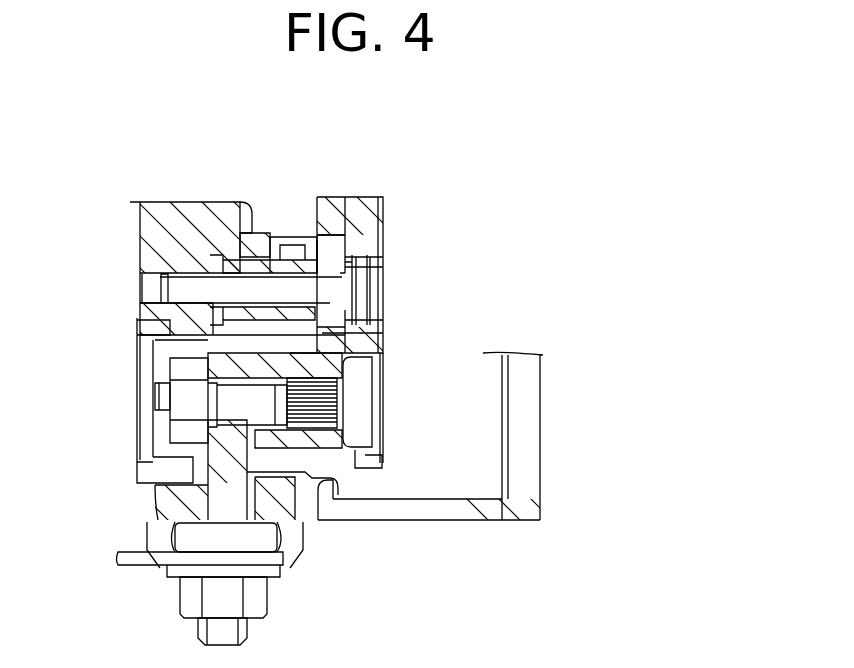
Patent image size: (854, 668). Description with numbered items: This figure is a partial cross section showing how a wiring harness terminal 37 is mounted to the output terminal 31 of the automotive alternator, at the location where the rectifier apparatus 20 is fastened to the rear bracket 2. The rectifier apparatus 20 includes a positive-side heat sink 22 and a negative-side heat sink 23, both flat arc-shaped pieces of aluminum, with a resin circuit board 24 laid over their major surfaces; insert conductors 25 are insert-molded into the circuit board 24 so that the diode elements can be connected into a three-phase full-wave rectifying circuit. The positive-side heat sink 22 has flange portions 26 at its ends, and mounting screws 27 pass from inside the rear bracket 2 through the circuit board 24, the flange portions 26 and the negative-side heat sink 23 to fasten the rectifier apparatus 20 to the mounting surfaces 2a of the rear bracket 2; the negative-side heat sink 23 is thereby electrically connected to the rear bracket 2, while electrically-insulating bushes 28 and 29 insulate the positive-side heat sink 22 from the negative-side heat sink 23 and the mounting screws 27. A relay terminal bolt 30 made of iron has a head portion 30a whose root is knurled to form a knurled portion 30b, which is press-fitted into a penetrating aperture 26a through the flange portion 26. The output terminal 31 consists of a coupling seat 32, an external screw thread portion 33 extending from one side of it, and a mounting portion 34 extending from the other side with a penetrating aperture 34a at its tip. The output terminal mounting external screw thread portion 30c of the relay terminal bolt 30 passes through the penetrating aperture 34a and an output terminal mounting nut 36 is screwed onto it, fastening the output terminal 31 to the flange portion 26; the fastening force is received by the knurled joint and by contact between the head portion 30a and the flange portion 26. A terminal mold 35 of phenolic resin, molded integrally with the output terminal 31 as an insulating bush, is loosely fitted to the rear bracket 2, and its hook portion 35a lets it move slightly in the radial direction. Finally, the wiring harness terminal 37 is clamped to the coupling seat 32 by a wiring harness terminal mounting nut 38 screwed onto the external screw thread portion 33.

The rear bracket 2 is at (129, 221).
The mounting surfaces 2a is at (251, 210).
The rectifier apparatus 20 is at (510, 194).
The positive-side heat sink 22 is at (299, 235).
The negative-side heat sink 23 is at (263, 232).
The circuit board 24 is at (397, 213).
The insert conductors 25 is at (345, 225).
The flange portions 26 is at (381, 333).
The penetrating aperture 26a is at (257, 445).
The mounting screws 27 is at (377, 287).
The electrically-insulating bush 28 is at (281, 230).
The electrically-insulating bush 29 is at (367, 253).
The relay terminal bolt 30 is at (364, 407).
The head portion 30a is at (370, 372).
The knurled portion 30b is at (333, 418).
The output terminal mounting external screw thread portion 30c is at (152, 400).
The output terminal 31 is at (258, 540).
The coupling seat 32 is at (150, 533).
The external screw thread portion 33 is at (190, 633).
The mounting portion 34 is at (143, 462).
The penetrating aperture 34a is at (137, 320).
The terminal mold 35 is at (157, 500).
The hook portion 35a is at (295, 473).
The output terminal mounting nut 36 is at (170, 355).
The wiring harness terminal 37 is at (120, 558).
The wiring harness terminal mounting nut 38 is at (178, 595).